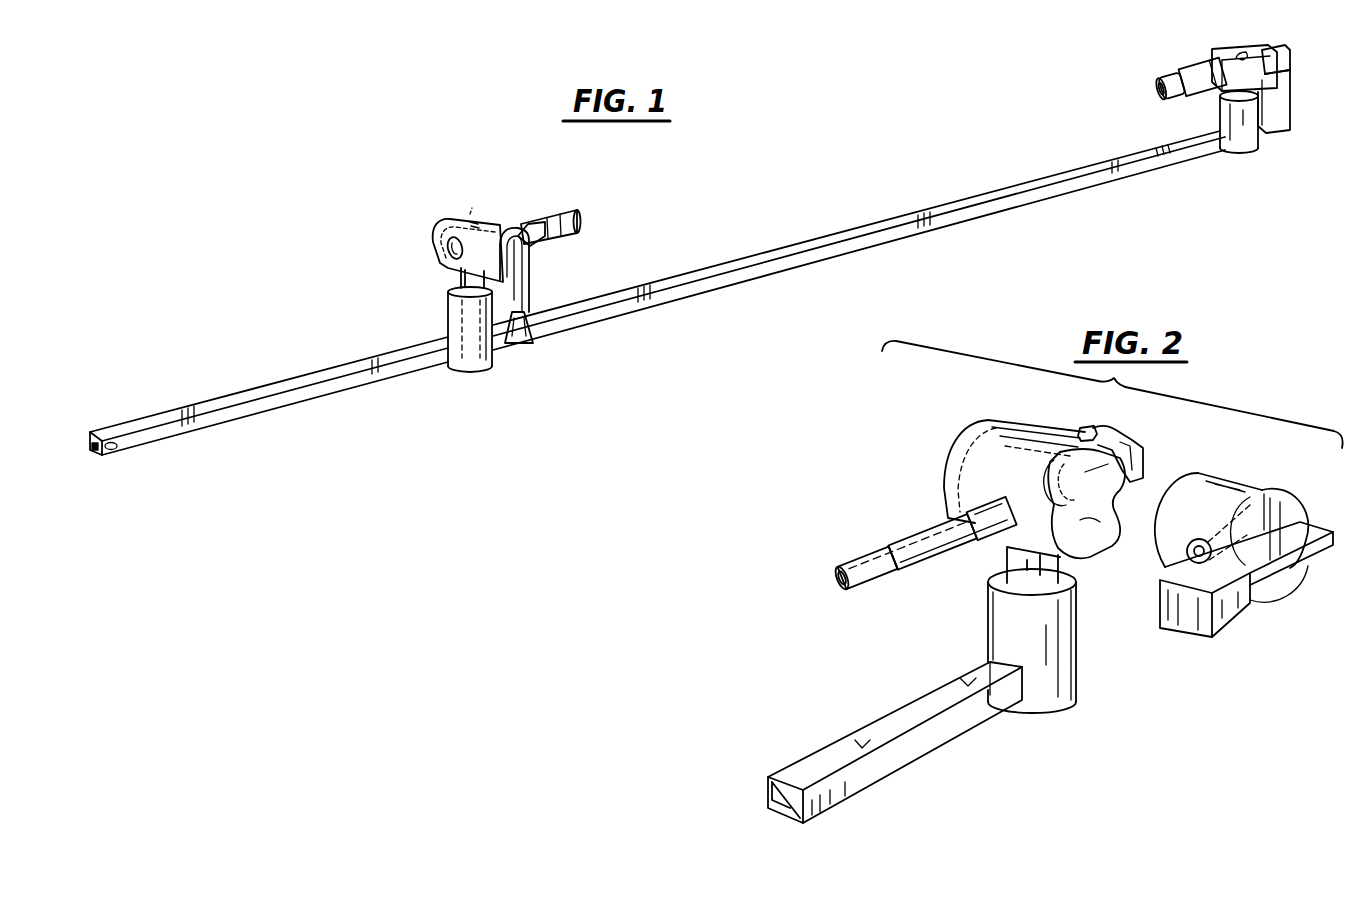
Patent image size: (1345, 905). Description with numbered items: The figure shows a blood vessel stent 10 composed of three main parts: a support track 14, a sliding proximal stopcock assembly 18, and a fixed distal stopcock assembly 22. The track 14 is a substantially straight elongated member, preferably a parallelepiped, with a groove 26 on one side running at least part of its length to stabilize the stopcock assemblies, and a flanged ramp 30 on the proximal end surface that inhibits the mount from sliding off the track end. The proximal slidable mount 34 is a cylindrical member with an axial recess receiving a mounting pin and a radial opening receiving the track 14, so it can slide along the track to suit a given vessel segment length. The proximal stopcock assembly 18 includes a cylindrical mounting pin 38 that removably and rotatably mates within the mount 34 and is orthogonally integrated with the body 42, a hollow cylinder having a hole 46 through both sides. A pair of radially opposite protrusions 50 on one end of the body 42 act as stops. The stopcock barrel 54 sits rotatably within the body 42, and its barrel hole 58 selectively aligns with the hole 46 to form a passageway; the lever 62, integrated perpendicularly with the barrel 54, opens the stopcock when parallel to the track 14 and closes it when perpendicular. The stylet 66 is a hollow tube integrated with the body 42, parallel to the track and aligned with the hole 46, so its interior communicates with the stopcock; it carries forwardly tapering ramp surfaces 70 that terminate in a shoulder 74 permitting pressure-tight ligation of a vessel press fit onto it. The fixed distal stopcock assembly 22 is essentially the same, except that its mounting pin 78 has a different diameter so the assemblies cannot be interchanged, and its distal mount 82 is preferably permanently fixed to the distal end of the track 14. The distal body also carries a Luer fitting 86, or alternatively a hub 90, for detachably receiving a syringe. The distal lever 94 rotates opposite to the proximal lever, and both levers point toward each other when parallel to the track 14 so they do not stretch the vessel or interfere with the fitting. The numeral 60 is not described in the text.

In FIG. 1, the blood vessel stent 10 is at (784, 152).
In FIG. 1, the support track 14 is at (275, 386).
In FIG. 2, the support track 14 is at (930, 742).
In FIG. 1, the sliding proximal stopcock assembly 18 is at (486, 185).
In FIG. 1, the fixed distal stopcock assembly 22 is at (1158, 105).
In FIG. 2, the fixed distal stopcock assembly 22 is at (920, 424).
In FIG. 1, the groove 26 is at (94, 451).
In FIG. 2, the groove 26 is at (783, 812).
In FIG. 1, the ramp 30 is at (122, 449).
In FIG. 1, the proximal slidable mount 34 is at (450, 318).
In FIG. 1, the cylindrical mounting pin 38 is at (458, 281).
In FIG. 1, the body 42 is at (436, 230).
In FIG. 1, the hole 46 is at (448, 251).
In FIG. 1, the protrusions 50 is at (540, 226).
In FIG. 2, the protrusions 50 is at (1116, 528).
In FIG. 1, the stopcock barrel 54 is at (510, 228).
In FIG. 2, the stopcock barrel 54 is at (1216, 478).
In FIG. 1, the barrel hole 58 is at (470, 212).
In FIG. 2, the barrel hole 58 is at (1163, 565).
In FIG. 2, the nozzle tip 60 is at (836, 588).
In FIG. 1, the lever 62 is at (524, 306).
In FIG. 1, the stylet 66 is at (582, 216).
In FIG. 2, the ramp surfaces 70 is at (872, 552).
In FIG. 2, the shoulder 74 is at (946, 503).
In FIG. 1, the mounting pin 78 is at (1223, 96).
In FIG. 1, the distal mount 82 is at (1234, 149).
In FIG. 2, the distal mount 82 is at (1074, 662).
In FIG. 1, the Luer fitting 86 is at (1282, 58).
In FIG. 2, the Luer fitting 86 is at (1134, 442).
In FIG. 2, the hub 90 is at (1093, 426).
In FIG. 1, the distal lever 94 is at (1286, 118).
In FIG. 2, the distal lever 94 is at (1172, 628).